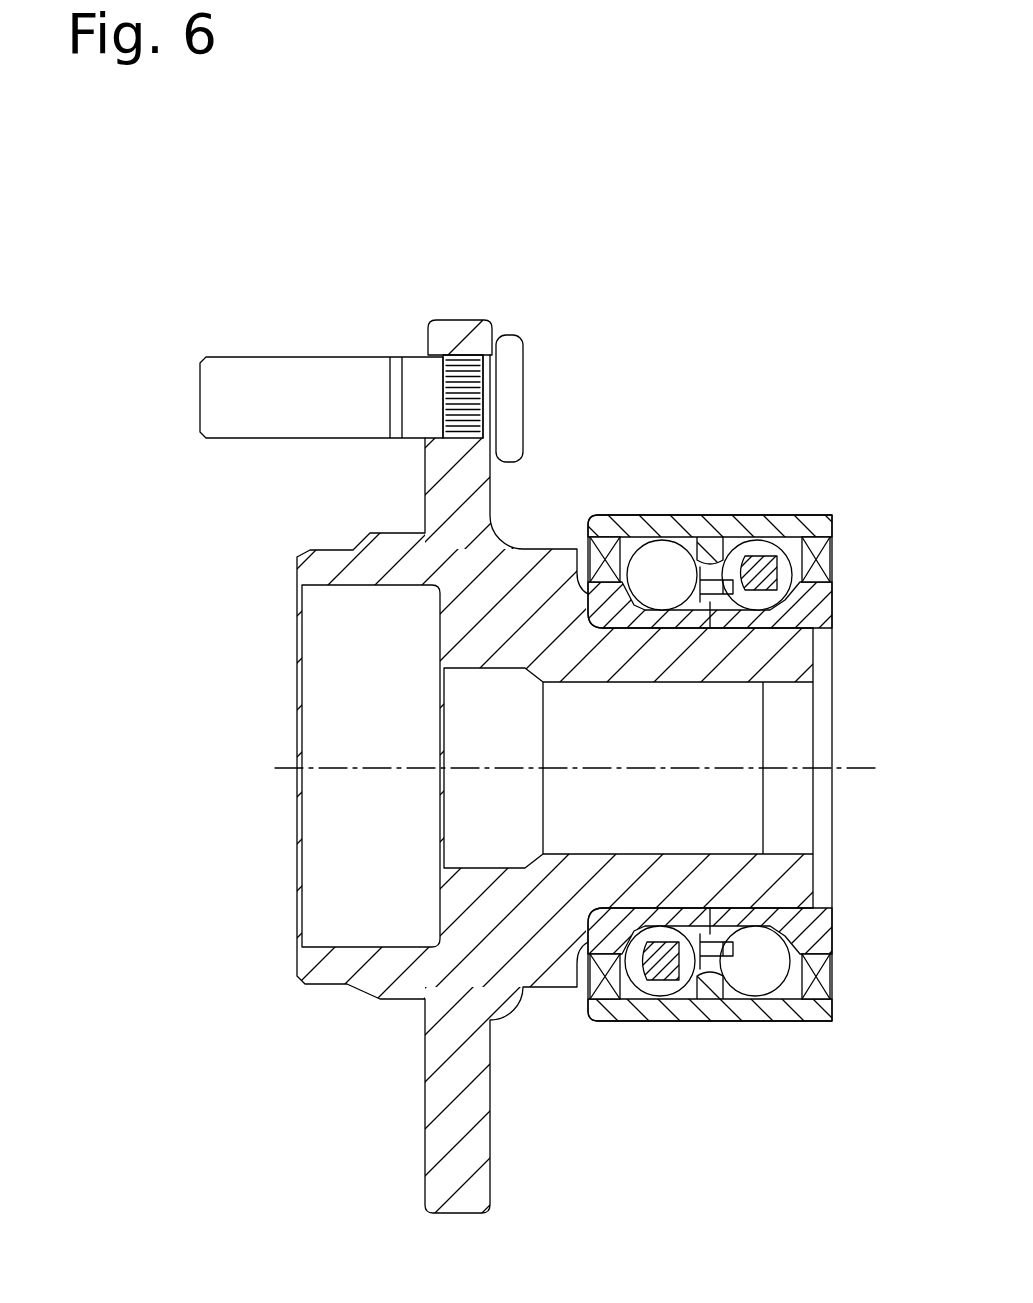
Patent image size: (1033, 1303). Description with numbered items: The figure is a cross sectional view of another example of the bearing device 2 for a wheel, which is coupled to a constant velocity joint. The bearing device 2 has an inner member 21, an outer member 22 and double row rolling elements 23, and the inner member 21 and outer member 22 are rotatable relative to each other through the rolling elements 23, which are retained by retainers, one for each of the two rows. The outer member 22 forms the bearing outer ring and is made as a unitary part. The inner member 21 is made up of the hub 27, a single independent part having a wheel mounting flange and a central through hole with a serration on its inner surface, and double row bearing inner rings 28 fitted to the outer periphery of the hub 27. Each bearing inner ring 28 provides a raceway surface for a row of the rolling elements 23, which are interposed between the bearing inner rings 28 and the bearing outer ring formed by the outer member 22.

The bearing device 2 is at (468, 719).
The inner member 21 is at (433, 784).
The outer member 22 is at (735, 683).
The double row rolling elements 23 is at (650, 577).
The hub 27 is at (485, 669).
The bearing inner ring 28 is at (545, 690).